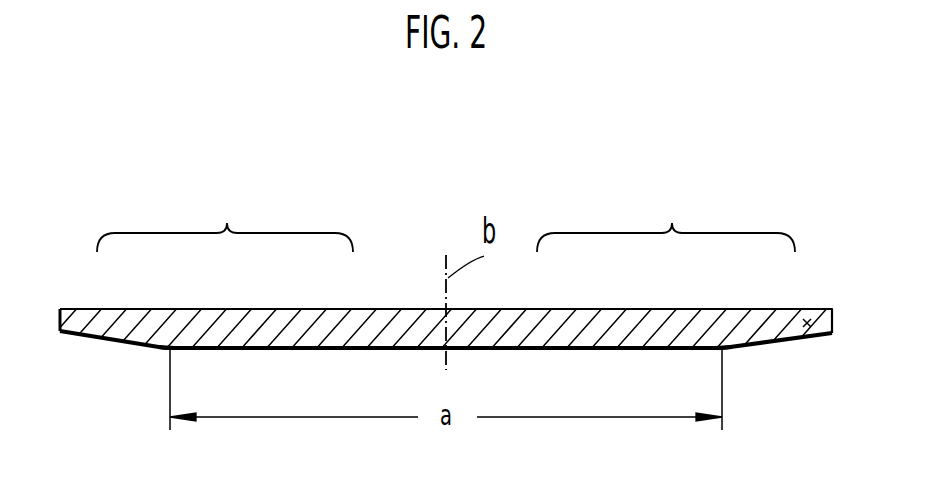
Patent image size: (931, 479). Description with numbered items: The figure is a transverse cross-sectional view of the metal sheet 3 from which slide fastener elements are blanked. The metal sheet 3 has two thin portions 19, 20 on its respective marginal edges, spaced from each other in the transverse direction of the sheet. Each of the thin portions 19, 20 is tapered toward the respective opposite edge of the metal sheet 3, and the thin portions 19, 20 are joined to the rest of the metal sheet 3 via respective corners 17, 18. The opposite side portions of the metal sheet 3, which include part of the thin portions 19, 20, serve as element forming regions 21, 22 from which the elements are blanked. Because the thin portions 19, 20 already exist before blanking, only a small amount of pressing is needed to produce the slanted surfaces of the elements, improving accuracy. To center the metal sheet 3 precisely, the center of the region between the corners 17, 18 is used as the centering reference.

The metal sheet 3 is at (388, 308).
The corner 17 is at (725, 350).
The corner 18 is at (163, 350).
The thin portion 19 is at (813, 334).
The thin portion 20 is at (83, 336).
The element forming region 21 is at (666, 214).
The element forming region 22 is at (225, 214).